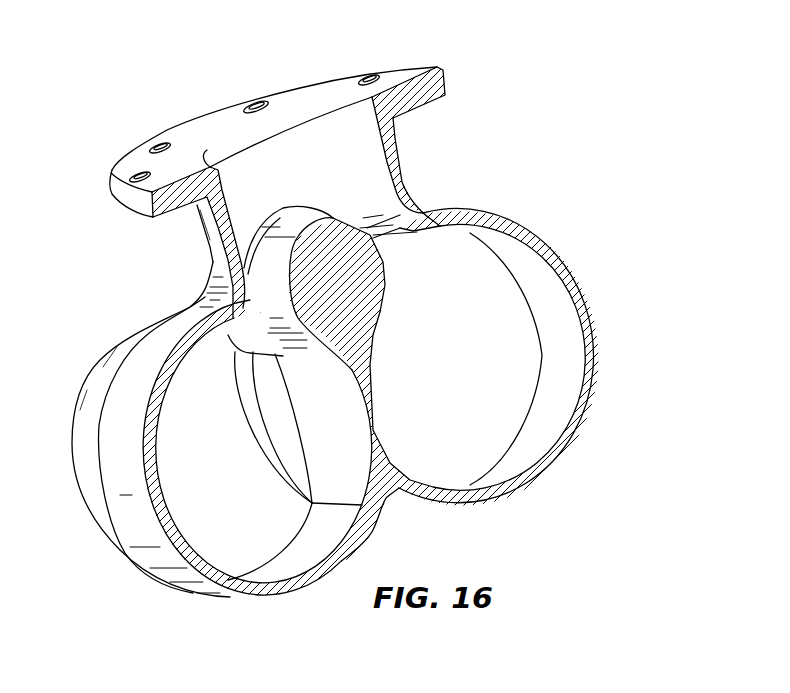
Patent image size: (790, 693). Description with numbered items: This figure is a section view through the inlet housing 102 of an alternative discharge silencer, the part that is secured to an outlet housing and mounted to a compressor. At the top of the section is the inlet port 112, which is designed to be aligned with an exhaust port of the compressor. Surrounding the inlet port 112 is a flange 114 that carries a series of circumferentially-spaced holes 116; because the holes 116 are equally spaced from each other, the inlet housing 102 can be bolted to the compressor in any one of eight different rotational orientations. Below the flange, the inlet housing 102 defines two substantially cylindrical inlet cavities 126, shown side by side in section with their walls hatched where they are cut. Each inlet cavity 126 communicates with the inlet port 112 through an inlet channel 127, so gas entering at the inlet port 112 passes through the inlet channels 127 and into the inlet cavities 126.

The inlet housing 102 is at (84, 443).
The inlet port 112 is at (220, 147).
The flange 114 is at (445, 77).
The holes 116 is at (253, 100).
The inlet cavities 126 is at (513, 387).
The inlet channels 127 is at (393, 220).